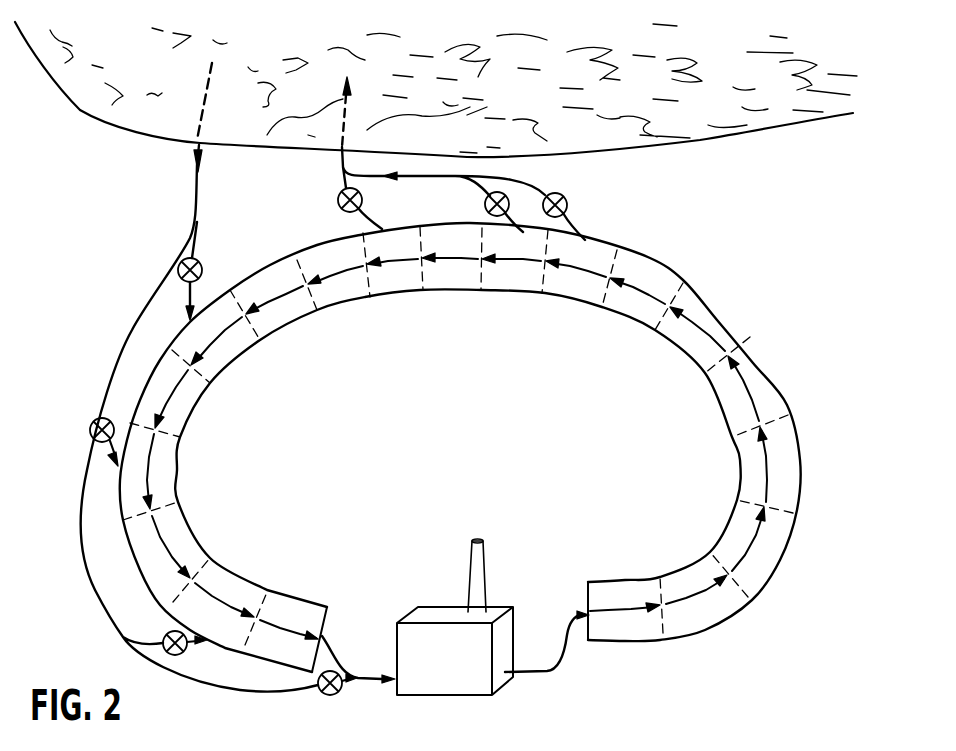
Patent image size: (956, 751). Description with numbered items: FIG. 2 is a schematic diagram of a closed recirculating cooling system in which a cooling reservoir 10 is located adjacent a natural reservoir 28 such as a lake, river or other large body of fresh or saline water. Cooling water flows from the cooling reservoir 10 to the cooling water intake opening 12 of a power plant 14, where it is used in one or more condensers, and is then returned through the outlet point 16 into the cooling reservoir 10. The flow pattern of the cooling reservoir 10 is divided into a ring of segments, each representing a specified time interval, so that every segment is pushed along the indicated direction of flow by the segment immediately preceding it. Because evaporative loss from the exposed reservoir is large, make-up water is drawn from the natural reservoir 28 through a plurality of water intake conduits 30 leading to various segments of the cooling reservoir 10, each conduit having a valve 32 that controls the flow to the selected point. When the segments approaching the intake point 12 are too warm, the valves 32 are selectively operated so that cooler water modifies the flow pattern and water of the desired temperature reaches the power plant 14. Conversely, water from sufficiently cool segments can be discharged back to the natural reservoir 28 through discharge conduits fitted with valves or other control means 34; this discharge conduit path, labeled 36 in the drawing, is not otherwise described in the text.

The cooling reservoir 10 is at (112, 629).
The cooling water intake opening 12 is at (373, 688).
The power plant 14 is at (447, 697).
The outlet point 16 is at (521, 677).
The natural reservoir 28 is at (547, 62).
The water intake conduits 30 is at (200, 185).
The valve 32 is at (197, 256).
The valves or other control means 34 is at (336, 200).
The surface discharge pipe 36 is at (427, 173).